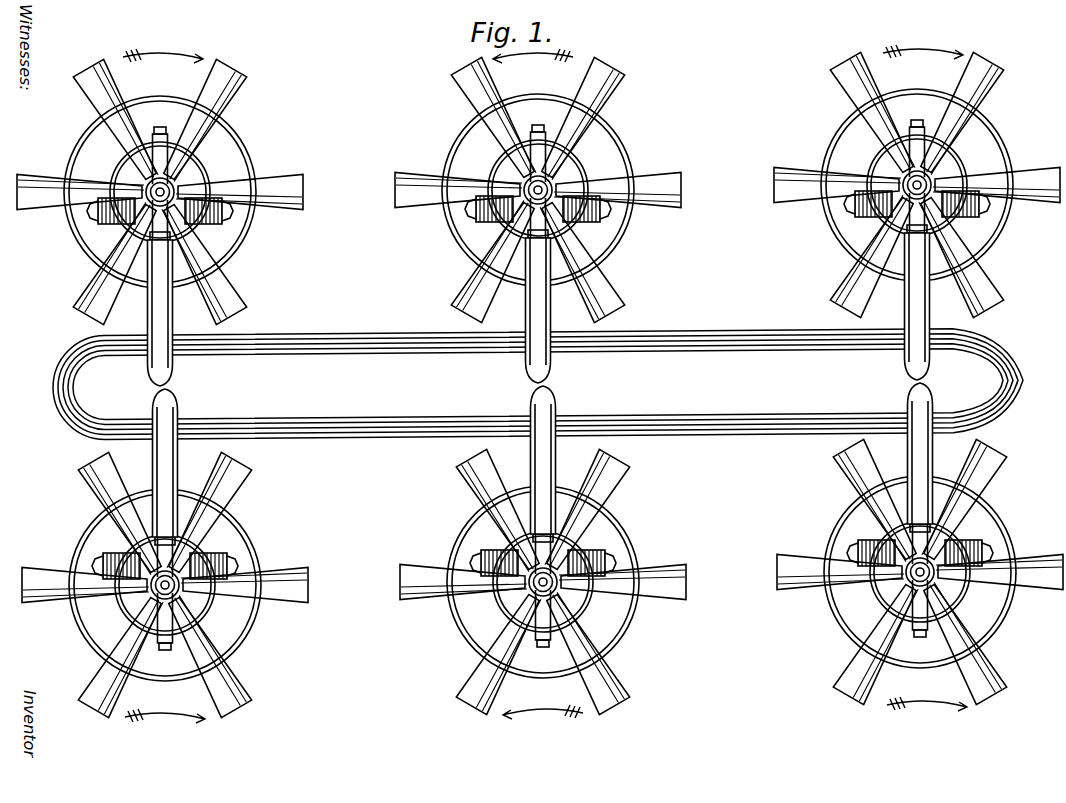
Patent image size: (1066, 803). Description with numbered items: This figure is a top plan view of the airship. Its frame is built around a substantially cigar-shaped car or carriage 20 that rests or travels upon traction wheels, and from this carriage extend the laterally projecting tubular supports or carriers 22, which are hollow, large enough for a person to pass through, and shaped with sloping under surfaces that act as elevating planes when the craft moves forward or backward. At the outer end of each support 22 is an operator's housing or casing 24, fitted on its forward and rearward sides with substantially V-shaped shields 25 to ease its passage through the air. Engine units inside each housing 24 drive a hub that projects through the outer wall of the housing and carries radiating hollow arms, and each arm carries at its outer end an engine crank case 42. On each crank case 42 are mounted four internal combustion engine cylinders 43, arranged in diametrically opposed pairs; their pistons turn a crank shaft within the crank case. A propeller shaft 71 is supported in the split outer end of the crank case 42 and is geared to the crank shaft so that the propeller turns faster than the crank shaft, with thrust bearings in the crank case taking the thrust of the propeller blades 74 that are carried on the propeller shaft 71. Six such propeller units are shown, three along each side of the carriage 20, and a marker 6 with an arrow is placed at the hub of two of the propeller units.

The wind motor unit 6 is at (898, 326).
The car or carriage 20 is at (538, 384).
The tubular supports or carriers 22 is at (173, 325).
The operator's housing or casing 24 is at (217, 227).
The V-shaped shields 25 is at (88, 213).
The engine crank case 42 is at (173, 178).
The internal combustion engine cylinders 43 is at (162, 127).
The propeller shaft 71 is at (147, 187).
The wind vane / blade 74 is at (86, 92).